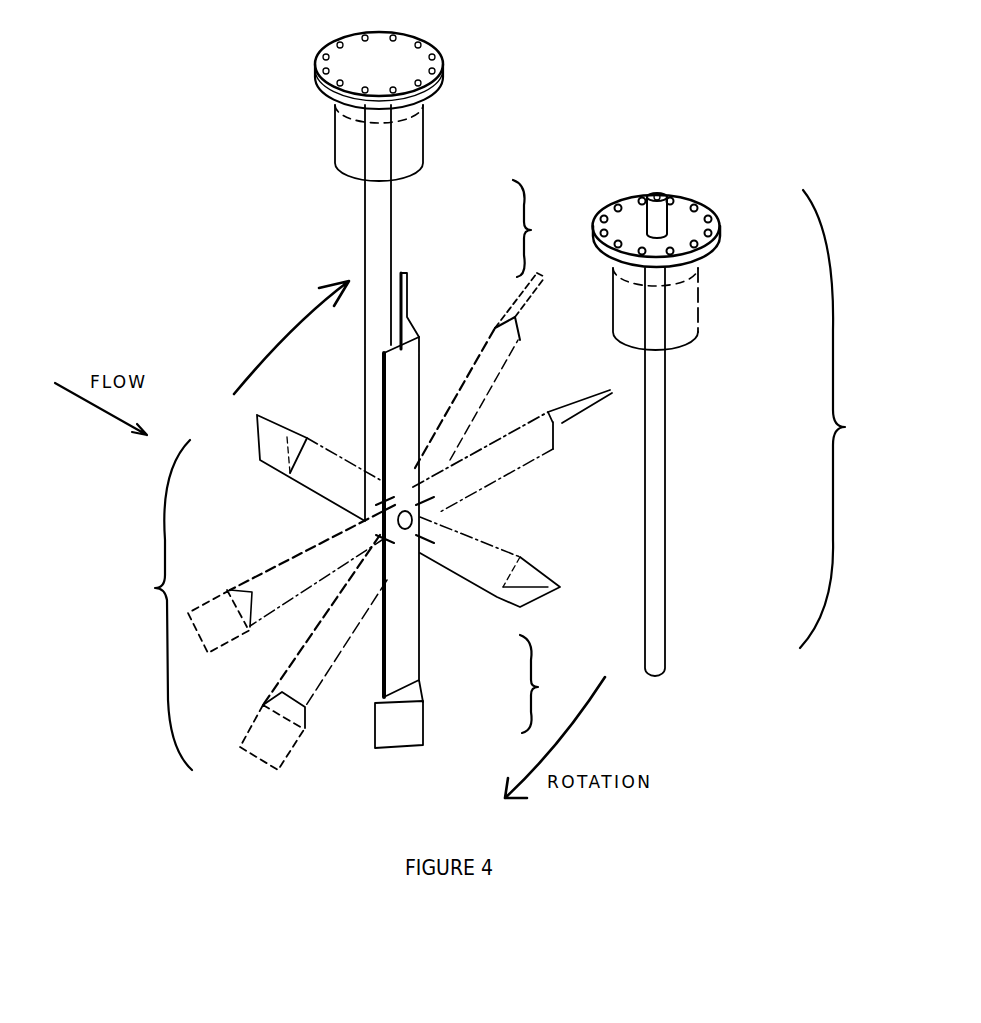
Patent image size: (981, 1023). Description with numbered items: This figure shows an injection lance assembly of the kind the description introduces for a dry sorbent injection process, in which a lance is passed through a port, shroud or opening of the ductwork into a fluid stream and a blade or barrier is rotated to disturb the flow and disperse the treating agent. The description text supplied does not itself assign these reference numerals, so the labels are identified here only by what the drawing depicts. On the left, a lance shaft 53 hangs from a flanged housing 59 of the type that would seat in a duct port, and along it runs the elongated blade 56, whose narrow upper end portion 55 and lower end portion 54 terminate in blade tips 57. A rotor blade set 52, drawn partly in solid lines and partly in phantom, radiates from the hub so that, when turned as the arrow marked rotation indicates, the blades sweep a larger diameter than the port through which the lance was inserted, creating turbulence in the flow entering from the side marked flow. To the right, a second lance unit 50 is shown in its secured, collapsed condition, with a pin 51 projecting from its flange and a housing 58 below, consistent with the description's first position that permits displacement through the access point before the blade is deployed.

The second shaft assembly 50 is at (742, 387).
The pin 51 is at (677, 187).
The rotor blade assembly 52 is at (361, 521).
The shaft 53 is at (352, 233).
The lower blade end portion 54 is at (552, 684).
The upper blade end portion 55 is at (544, 228).
The blade 56 is at (432, 344).
The blade tip 57 is at (423, 270).
The housing 58 is at (716, 289).
The housing 59 is at (323, 126).